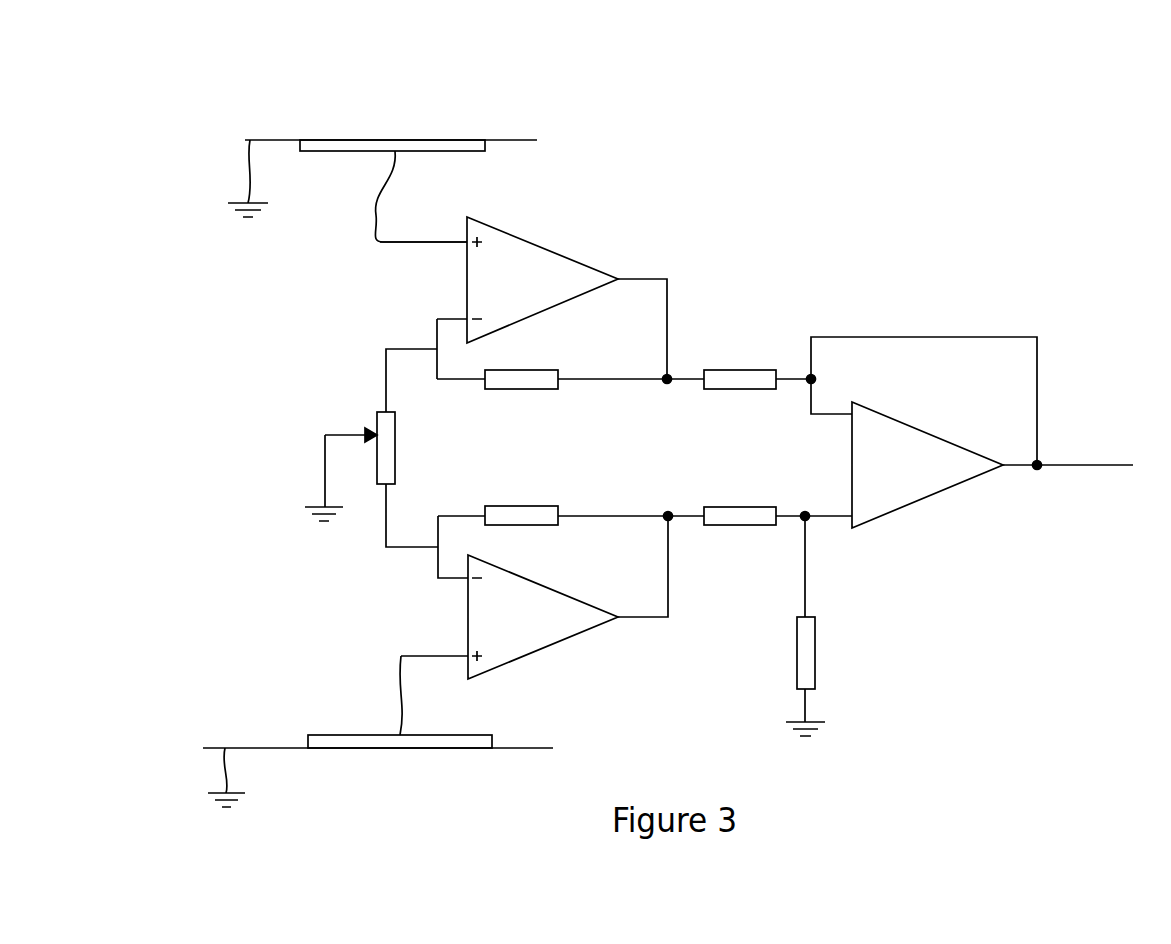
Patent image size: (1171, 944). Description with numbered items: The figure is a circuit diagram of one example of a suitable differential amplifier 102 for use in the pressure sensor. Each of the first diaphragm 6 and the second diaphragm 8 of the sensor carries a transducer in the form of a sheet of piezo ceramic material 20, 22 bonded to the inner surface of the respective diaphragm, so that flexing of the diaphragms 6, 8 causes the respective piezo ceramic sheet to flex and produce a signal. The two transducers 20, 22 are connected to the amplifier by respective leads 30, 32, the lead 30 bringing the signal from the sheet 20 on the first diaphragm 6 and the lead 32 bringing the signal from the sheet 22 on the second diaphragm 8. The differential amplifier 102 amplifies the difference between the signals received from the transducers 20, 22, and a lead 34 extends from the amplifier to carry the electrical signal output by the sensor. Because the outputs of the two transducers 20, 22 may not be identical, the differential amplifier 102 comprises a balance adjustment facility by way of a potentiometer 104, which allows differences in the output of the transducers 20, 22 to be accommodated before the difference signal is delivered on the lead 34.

The first diaphragm 6 is at (512, 140).
The second diaphragm 8 is at (527, 748).
The piezo ceramic sheet 20 is at (350, 145).
The piezo ceramic sheet 22 is at (366, 743).
The lead 30 is at (373, 203).
The lead 32 is at (400, 690).
The lead 34 is at (1103, 465).
The differential amplifier 102 is at (924, 218).
The potentiometer 104 is at (375, 420).